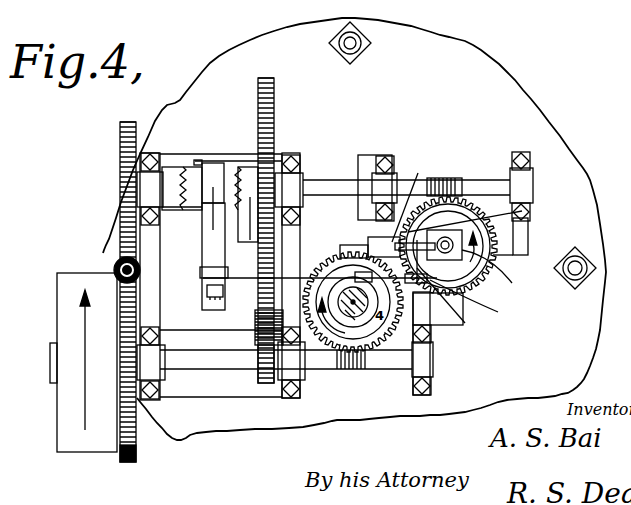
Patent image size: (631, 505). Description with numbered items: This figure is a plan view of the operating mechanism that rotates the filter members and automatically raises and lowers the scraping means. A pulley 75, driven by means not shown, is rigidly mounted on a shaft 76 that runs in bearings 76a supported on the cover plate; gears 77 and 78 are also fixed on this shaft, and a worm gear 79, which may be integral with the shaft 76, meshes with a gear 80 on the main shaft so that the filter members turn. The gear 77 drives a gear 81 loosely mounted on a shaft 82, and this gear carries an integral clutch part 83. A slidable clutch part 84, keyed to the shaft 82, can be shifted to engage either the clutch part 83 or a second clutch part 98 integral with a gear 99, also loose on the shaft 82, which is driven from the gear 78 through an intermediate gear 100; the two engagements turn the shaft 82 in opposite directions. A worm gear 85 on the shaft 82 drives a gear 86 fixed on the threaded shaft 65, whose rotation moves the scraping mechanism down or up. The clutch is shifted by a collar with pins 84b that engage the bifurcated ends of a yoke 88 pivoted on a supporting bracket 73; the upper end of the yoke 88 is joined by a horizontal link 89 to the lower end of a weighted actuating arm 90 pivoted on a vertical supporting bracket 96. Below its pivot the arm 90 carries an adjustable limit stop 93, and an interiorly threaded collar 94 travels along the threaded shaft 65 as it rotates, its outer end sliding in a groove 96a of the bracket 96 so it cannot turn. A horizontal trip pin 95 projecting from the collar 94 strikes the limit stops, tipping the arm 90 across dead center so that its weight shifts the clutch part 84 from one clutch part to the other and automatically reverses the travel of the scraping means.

The threaded shaft 65 is at (510, 280).
The supporting bracket 73 is at (207, 287).
The pulley 75 is at (68, 273).
The shaft 76 is at (231, 362).
The bearings 76a is at (157, 403).
The gear 77 is at (140, 455).
The gear 78 is at (268, 385).
The worm gear 79 is at (354, 372).
The gear 80 is at (352, 246).
The gear 81 is at (121, 203).
The shaft 82 is at (322, 183).
The clutch part 83 is at (178, 178).
The slidable clutch part 84 is at (197, 209).
The pins 84b is at (204, 162).
The worm gear 85 is at (442, 180).
The gear 86 is at (500, 263).
The yoke 88 is at (213, 203).
The horizontal link 89 is at (294, 277).
The actuating arm 90 is at (366, 286).
The limit stop 93 is at (465, 323).
The threaded collar 94 is at (530, 211).
The trip pin 95 is at (496, 311).
The supporting bracket 96 is at (416, 176).
The groove 96a is at (413, 222).
The clutch part 98 is at (250, 240).
The gear 99 is at (258, 110).
The gear 100 is at (256, 327).